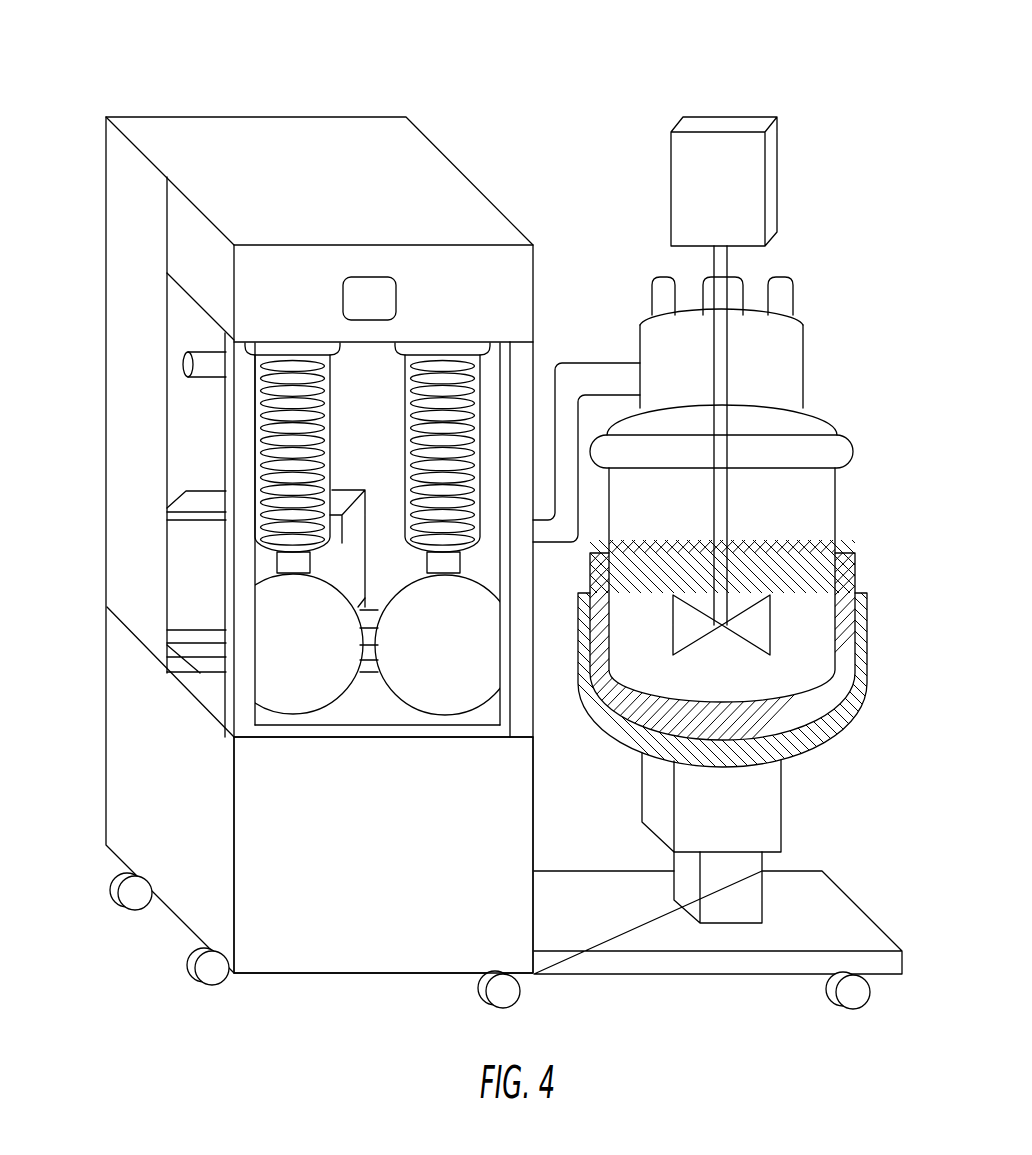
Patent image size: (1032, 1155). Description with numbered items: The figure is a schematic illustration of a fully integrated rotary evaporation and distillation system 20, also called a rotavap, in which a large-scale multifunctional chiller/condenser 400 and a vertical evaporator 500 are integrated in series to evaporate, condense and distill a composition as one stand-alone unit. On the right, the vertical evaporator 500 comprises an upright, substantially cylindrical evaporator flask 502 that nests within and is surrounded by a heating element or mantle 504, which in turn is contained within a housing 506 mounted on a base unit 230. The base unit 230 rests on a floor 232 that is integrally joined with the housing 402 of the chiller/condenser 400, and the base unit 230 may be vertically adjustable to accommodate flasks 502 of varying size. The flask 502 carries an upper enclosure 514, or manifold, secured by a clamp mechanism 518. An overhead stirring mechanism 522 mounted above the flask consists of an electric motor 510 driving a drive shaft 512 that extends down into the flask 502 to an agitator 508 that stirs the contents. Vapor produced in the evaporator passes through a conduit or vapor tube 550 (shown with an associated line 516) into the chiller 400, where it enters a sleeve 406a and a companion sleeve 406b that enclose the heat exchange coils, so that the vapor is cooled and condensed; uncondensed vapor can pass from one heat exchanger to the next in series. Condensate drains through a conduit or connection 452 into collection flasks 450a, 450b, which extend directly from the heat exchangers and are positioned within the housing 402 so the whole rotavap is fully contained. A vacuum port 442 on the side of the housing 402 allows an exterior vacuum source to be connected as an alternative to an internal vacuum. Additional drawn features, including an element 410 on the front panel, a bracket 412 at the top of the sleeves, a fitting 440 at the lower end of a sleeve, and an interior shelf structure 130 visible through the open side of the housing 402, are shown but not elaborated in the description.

The rotary evaporation system 20 is at (523, 507).
The shelf assembly 130 is at (182, 603).
The base unit 230 is at (752, 816).
The floor 232 is at (833, 917).
The chiller/condenser 400 is at (306, 529).
The housing 402 is at (268, 872).
The sleeve 406a is at (410, 515).
The heating coil 406b is at (258, 470).
The control display 410 is at (370, 296).
The mounting bracket 412 is at (462, 352).
The connector 440 is at (481, 570).
The vacuum port 442 is at (188, 362).
The collection flask 450a is at (413, 672).
The collection flask 450b is at (302, 673).
The conduit or connection 452 is at (290, 566).
The vertical evaporator 500 is at (681, 449).
The evaporator flask 502 is at (835, 508).
The heating element or mantle 504 is at (823, 610).
The housing 506 is at (868, 683).
The agitator 508 is at (742, 628).
The electric motor 510 is at (780, 170).
The drive shaft 512 is at (720, 336).
The upper enclosure 514 is at (790, 345).
The conduit 516 is at (603, 378).
The clamp mechanism 518 is at (833, 450).
The overhead stirring mechanism 522 is at (662, 338).
The conduit or vapor tube 550 is at (570, 520).